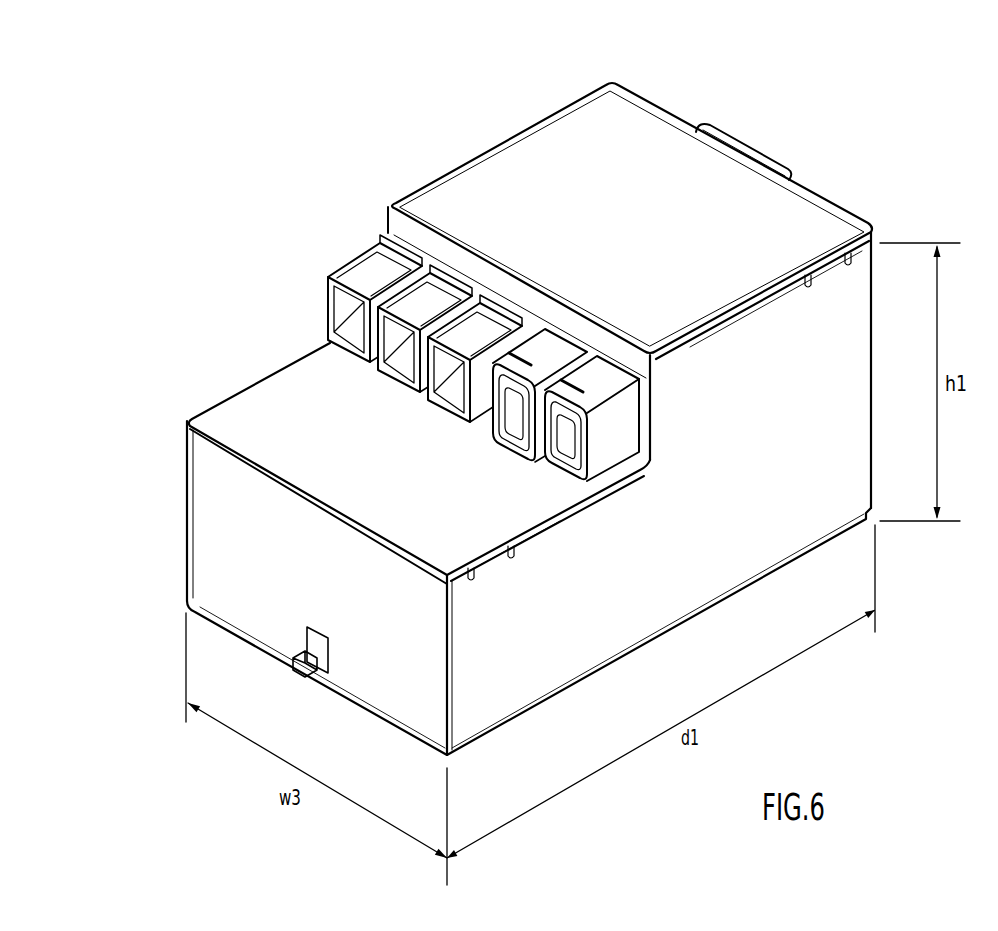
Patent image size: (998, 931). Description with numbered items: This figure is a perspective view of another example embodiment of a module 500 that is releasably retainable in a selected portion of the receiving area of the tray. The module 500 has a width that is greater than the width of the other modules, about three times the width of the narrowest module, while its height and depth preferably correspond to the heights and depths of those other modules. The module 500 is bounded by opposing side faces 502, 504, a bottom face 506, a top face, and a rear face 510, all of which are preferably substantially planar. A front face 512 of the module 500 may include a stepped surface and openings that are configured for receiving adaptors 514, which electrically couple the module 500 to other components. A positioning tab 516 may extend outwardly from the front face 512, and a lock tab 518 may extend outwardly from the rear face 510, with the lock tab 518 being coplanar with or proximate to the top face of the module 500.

The module 500 is at (882, 78).
The side face 502 is at (769, 459).
The side face 504 is at (444, 174).
The bottom face 506 is at (541, 178).
The rear face 510 is at (878, 338).
The front face 512 is at (243, 430).
The adaptors 514 is at (424, 304).
The positioning tab 516 is at (300, 660).
The lock tab 518 is at (728, 138).